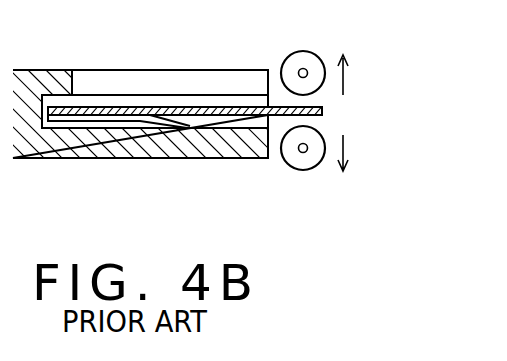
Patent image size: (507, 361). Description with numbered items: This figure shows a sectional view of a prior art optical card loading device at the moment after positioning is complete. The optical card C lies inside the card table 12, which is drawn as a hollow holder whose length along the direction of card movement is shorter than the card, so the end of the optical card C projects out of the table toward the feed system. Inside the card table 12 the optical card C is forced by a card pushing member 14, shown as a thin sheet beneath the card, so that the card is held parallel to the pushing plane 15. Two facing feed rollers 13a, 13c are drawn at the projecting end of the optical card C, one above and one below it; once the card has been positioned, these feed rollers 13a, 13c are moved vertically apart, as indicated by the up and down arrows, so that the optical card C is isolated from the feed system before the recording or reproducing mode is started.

The card table 12 is at (219, 86).
The pushing plane 15 is at (154, 106).
The card pushing member 14 is at (160, 132).
The feed roller 13a is at (310, 58).
The feed roller 13c is at (310, 168).
The optical card C is at (322, 111).